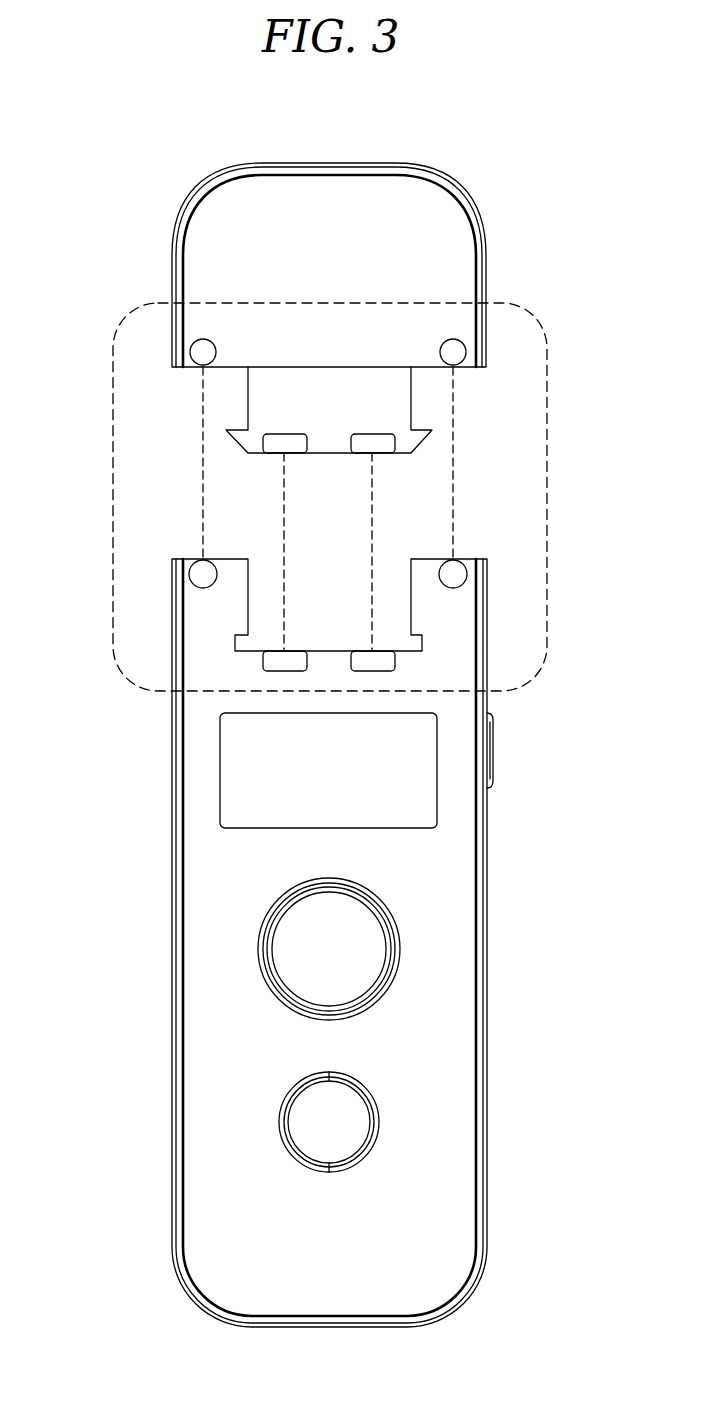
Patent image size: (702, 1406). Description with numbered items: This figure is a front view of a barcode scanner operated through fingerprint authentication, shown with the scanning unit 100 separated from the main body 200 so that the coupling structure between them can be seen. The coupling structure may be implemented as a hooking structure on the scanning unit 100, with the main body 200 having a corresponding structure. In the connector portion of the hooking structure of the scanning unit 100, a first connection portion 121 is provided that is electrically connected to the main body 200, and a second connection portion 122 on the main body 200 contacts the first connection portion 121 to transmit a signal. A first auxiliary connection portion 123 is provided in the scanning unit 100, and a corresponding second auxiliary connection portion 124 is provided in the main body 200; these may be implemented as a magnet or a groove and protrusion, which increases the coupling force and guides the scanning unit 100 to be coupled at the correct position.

The scanning unit 100 is at (406, 206).
The main body 200 is at (418, 1268).
The first connection portion 121 is at (290, 445).
The second connection portion 122 is at (285, 661).
The first auxiliary connection portion 123 is at (453, 340).
The second auxiliary connection portion 124 is at (453, 558).